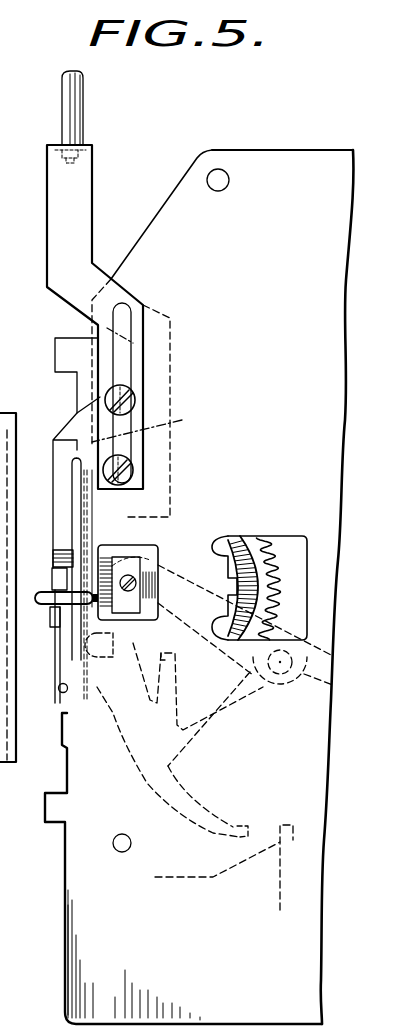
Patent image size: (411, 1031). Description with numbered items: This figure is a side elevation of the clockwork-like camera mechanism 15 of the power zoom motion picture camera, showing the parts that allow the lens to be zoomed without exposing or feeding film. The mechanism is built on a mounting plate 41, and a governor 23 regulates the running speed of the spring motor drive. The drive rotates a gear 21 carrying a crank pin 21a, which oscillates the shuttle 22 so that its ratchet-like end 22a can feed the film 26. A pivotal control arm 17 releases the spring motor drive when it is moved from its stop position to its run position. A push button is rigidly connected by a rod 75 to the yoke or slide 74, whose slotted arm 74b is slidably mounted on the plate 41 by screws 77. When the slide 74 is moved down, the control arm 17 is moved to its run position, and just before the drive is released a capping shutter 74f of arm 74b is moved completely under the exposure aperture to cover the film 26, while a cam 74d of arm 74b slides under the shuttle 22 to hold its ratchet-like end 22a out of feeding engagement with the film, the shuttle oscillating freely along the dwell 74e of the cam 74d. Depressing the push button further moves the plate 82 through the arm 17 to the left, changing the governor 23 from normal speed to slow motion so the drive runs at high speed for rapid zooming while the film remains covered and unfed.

The camera mechanism 15 is at (279, 130).
The control arm 17 is at (205, 803).
The gear 21 is at (112, 568).
The crank pin 21a is at (58, 597).
The shuttle 22 is at (60, 605).
The ratchet-like end 22a is at (80, 603).
The governor 23 is at (65, 887).
The film 26 is at (149, 426).
The mounting plate 41 is at (76, 936).
The slide 74 is at (82, 183).
The slotted arm 74b is at (144, 306).
The cam 74d is at (62, 540).
The dwell 74e is at (52, 480).
The capping shutter 74f is at (88, 540).
The rod 75 is at (80, 115).
The screws 77 is at (119, 392).
The plate 82 is at (215, 892).